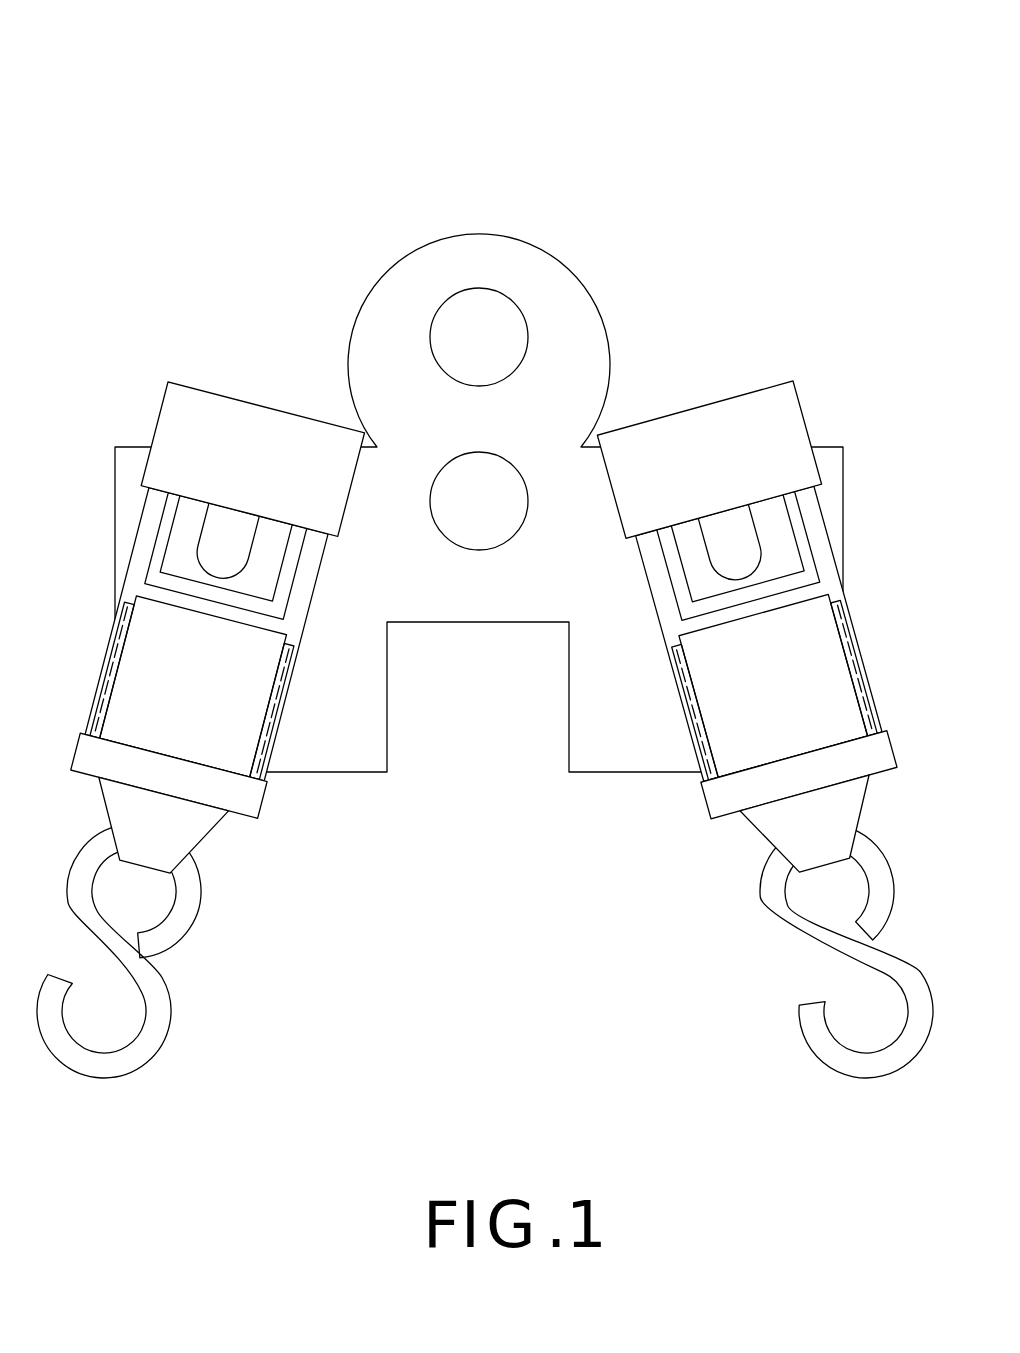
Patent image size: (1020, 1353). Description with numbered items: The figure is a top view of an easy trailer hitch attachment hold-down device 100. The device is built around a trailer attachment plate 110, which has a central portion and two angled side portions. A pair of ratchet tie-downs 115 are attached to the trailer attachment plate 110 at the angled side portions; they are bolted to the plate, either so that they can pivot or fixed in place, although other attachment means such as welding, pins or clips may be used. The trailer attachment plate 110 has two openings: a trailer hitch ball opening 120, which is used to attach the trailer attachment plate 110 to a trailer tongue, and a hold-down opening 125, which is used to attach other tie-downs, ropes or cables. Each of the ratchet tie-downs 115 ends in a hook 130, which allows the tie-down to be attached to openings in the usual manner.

The easy trailer hitch attachment hold-down device 100 is at (475, 592).
The trailer attachment plate 110 is at (557, 313).
The ratchet tie-downs 115 is at (200, 428).
The trailer hitch ball opening 120 is at (477, 517).
The hold-down opening 125 is at (457, 326).
The hook 130 is at (150, 1037).